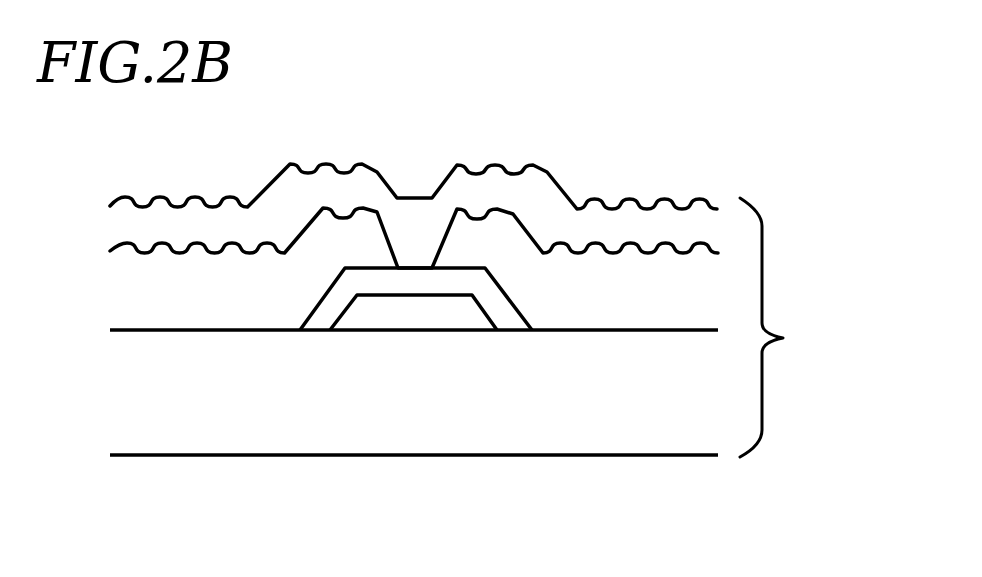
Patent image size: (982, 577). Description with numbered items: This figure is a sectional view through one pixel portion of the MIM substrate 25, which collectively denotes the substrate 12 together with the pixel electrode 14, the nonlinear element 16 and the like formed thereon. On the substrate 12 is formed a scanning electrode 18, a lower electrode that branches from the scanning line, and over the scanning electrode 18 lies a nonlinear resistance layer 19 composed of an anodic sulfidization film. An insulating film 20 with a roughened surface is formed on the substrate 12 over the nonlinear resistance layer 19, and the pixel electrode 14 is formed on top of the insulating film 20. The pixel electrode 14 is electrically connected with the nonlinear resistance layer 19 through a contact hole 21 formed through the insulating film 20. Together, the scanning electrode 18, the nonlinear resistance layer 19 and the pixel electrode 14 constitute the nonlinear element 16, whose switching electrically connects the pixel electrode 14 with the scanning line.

The substrate 12 is at (670, 430).
The pixel electrode 14 is at (645, 222).
The nonlinear element 16 is at (385, 345).
The scanning electrode 18 is at (452, 320).
The nonlinear resistance layer 19 is at (347, 282).
The insulating film 20 is at (472, 230).
The contact hole 21 is at (413, 236).
The MIM substrate 25 is at (790, 327).